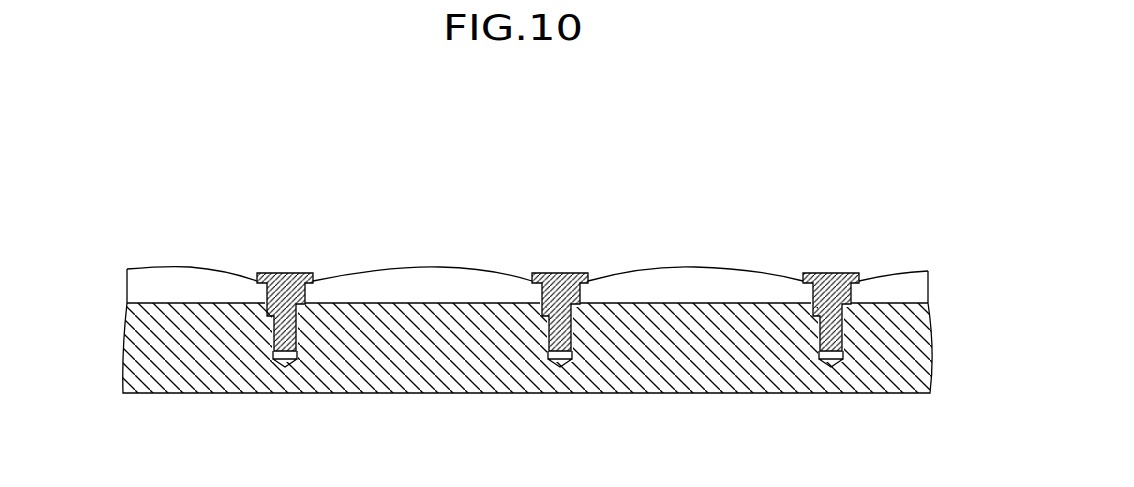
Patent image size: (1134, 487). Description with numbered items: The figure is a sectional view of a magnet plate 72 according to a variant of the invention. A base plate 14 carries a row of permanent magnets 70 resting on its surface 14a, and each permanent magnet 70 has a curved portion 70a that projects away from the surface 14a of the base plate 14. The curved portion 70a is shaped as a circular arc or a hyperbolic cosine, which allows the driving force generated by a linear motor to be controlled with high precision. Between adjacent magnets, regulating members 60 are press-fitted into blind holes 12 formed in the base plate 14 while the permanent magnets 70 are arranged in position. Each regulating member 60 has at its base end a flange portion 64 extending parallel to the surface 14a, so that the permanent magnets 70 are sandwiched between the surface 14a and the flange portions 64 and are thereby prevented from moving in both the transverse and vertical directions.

The blind hole 12 is at (300, 358).
The base plate 14 is at (692, 370).
The surface of the base plate 14a is at (403, 303).
The regulating member 60 is at (280, 265).
The flange portion 64 is at (268, 276).
The permanent magnet 70 is at (152, 260).
The curved portion 70a is at (187, 267).
The magnet plate 72 is at (503, 185).